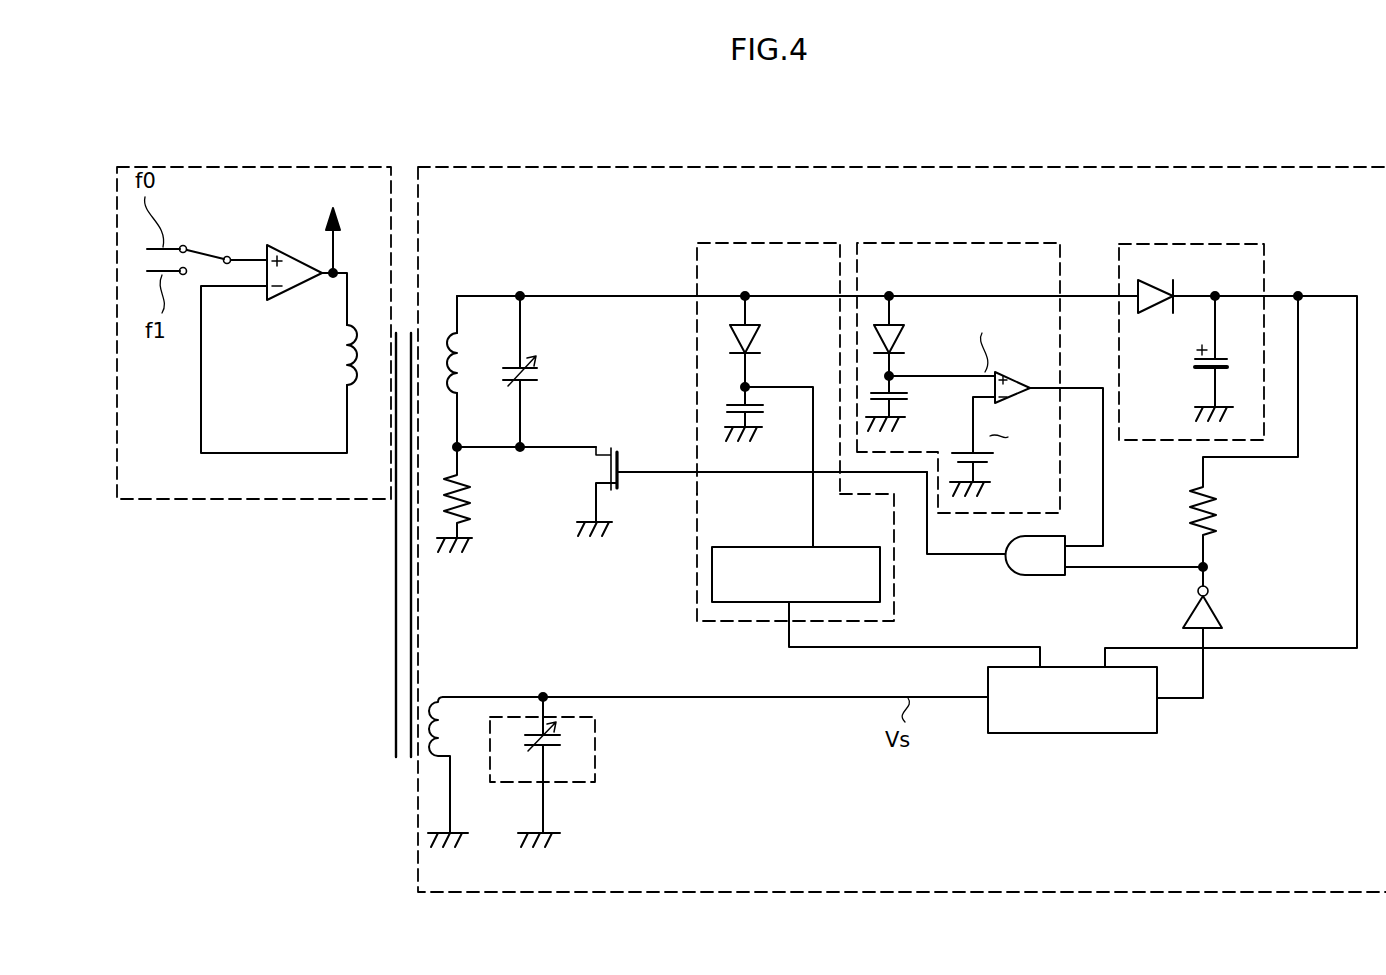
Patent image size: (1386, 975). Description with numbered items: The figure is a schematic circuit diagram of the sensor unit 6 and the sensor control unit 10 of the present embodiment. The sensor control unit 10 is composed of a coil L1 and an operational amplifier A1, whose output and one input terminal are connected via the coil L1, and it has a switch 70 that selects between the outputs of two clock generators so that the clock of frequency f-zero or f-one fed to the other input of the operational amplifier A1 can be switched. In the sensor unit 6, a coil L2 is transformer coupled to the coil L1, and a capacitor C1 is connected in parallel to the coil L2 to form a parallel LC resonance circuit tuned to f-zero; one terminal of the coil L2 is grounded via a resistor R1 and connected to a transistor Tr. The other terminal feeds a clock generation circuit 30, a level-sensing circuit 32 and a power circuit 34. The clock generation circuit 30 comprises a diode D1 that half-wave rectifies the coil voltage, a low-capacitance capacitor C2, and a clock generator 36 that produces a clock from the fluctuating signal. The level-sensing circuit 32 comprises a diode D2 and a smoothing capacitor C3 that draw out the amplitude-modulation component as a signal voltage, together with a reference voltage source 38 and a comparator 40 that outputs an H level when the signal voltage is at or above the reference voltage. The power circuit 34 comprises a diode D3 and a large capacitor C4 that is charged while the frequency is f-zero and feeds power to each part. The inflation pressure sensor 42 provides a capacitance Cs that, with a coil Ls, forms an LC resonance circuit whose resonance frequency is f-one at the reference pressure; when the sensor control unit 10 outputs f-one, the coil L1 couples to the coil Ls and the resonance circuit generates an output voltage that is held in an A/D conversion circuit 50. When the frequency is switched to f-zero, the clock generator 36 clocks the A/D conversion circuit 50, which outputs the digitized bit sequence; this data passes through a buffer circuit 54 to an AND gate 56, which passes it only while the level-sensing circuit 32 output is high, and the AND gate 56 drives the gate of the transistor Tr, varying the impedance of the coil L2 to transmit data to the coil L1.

The sensor unit 6 is at (1285, 170).
The sensor control unit 10 is at (237, 167).
The switch 70 is at (202, 243).
The clock generation circuit 30 is at (745, 242).
The level-sensing circuit 32 is at (895, 242).
The power circuit 34 is at (1197, 243).
The clock generator 36 is at (788, 547).
The reference voltage source 38 is at (990, 460).
The comparator 40 is at (1020, 378).
The inflation pressure sensor 42 is at (575, 765).
The A/D conversion circuit 50 is at (1083, 734).
The buffer circuit 54 is at (1213, 604).
The AND gate 56 is at (1045, 577).
The operational amplifier A1 is at (294, 278).
The coil L1 is at (343, 355).
The coil L2 is at (461, 363).
The capacitor C1 is at (537, 371).
The resistor R1 is at (476, 492).
The transistor Tr is at (761, 471).
The diode D1 is at (762, 341).
The capacitor C2 is at (760, 407).
The diode D2 is at (906, 336).
The capacitor C3 is at (903, 396).
The diode D3 is at (1151, 284).
The capacitor C4 is at (1223, 351).
The coil Ls is at (447, 765).
The capacitance Cs is at (532, 765).